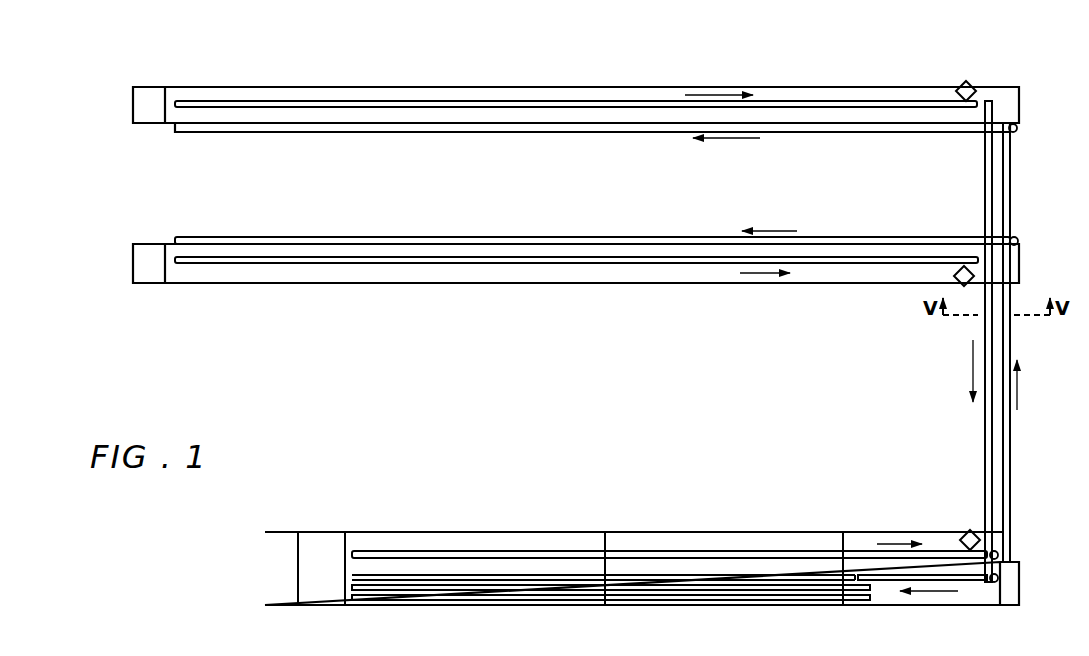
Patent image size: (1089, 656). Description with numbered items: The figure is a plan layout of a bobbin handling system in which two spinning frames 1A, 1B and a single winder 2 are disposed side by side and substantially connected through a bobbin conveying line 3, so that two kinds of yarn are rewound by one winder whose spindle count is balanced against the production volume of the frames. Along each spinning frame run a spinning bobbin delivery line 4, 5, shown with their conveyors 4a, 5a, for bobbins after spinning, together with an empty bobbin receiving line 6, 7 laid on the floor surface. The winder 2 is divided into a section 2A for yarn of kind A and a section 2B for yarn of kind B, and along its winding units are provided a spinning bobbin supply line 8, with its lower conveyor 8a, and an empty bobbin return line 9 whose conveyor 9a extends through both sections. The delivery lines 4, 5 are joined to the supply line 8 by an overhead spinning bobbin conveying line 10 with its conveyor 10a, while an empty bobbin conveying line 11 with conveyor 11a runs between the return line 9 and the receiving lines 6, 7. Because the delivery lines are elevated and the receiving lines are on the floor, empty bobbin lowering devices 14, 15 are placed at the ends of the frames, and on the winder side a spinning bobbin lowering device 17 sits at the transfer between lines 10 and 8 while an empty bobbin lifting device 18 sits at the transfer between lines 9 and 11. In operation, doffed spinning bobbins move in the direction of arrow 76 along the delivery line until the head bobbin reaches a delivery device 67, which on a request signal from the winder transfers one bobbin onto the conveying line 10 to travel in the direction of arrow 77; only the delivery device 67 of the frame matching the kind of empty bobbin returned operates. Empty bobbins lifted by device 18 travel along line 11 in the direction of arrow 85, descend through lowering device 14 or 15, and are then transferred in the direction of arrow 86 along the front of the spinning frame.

The spinning frame 1A is at (576, 266).
The spinning frame 1B is at (576, 106).
The winder 2 is at (642, 555).
The section 2A is at (476, 545).
The section 2B is at (668, 545).
The bobbin conveying line 3 is at (992, 341).
The spinning bobbin delivery line 4 is at (625, 266).
The spinning bobbin delivery line conveyor 4a is at (846, 263).
The spinning bobbin delivery line 5 is at (828, 90).
The spinning bobbin delivery line conveyor 5a is at (642, 103).
The empty bobbin receiving line 6 is at (700, 242).
The empty bobbin receiving line 7 is at (836, 126).
The spinning bobbin supply line 8 is at (923, 610).
The spinning bobbin supply line 8a is at (880, 583).
The empty bobbin return line 9 is at (748, 550).
The conveyor 9a is at (860, 555).
The spinning bobbin conveying line 10 is at (947, 341).
The spinning bobbin conveying line conveyor 10a is at (984, 413).
The empty bobbin conveying line 11 is at (1042, 342).
The conveyor 11a is at (1010, 425).
The empty bobbin lowering device 14 is at (1018, 241).
The empty bobbin lowering device 15 is at (1018, 131).
The spinning bobbin lowering device 17 is at (1000, 578).
The empty bobbin lifting device 18 is at (1000, 553).
The delivery device 67 is at (970, 85).
The arrow 76 is at (718, 94).
The arrow 77 is at (970, 358).
The arrow 85 is at (1020, 385).
The arrow 86 is at (772, 230).